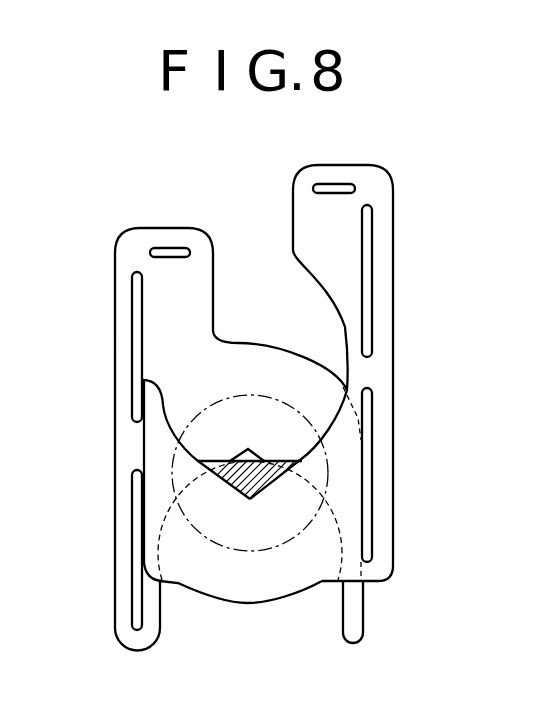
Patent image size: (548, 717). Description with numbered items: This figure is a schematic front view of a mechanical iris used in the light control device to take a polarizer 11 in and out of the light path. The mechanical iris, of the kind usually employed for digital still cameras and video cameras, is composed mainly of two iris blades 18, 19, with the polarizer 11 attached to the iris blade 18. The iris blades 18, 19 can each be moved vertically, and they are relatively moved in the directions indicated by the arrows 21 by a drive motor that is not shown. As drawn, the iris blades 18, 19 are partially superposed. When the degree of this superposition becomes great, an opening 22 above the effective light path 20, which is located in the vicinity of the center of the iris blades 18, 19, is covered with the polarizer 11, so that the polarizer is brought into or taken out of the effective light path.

The polarizer 11 is at (255, 499).
The iris blade 18 is at (190, 557).
The iris blade 19 is at (173, 335).
The effective light path 20 is at (172, 467).
The arrows 21 is at (417, 390).
The opening 22 is at (248, 449).